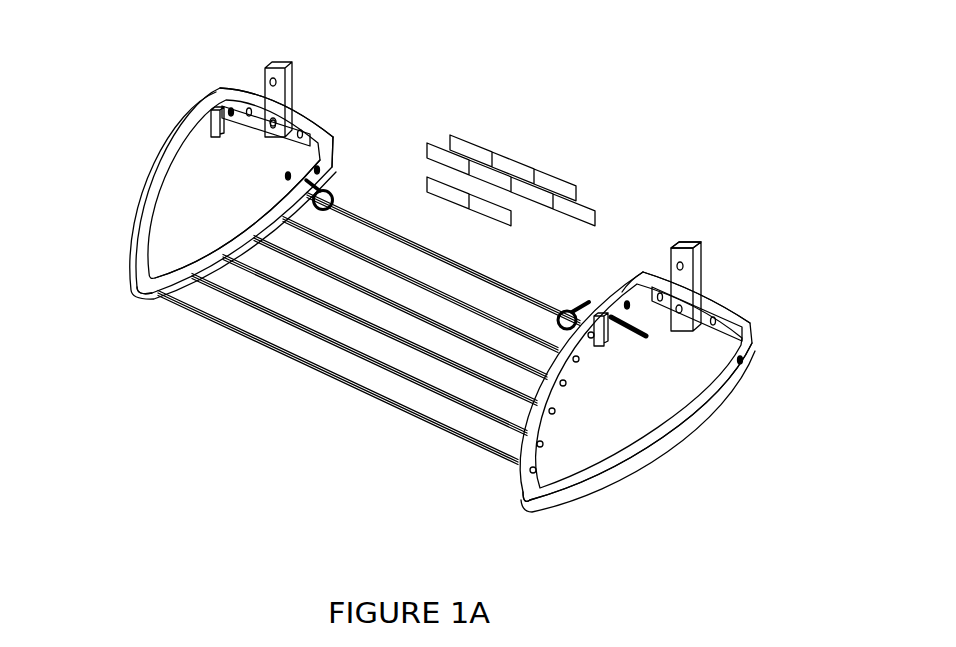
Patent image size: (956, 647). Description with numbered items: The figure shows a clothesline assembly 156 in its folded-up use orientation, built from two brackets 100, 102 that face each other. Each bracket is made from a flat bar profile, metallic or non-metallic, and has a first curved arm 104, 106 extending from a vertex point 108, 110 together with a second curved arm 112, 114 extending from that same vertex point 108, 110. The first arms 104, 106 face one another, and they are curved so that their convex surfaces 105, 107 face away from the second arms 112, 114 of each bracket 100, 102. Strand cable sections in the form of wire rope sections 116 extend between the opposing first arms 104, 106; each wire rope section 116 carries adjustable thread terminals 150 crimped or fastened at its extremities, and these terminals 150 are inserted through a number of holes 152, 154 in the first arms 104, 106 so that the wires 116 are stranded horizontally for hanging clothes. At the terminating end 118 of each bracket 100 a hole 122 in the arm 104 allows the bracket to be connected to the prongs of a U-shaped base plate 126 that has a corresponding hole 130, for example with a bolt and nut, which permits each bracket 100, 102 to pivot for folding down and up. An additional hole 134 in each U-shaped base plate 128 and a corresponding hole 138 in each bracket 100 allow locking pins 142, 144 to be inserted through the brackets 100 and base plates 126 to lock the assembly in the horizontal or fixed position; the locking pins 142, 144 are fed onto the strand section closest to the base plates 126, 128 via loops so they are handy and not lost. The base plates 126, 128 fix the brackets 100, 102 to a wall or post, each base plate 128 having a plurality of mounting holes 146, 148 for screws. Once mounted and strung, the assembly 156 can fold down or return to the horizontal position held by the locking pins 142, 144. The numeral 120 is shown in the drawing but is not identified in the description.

The bracket 100 is at (399, 286).
The bracket 102 is at (637, 333).
The first curved arm 104 is at (245, 171).
The convex surface 105 is at (273, 233).
The first curved arm 106 is at (555, 395).
The convex surface 107 is at (512, 417).
The vertex point 108 is at (138, 287).
The vertex point 110 is at (540, 503).
The second curved arm 112 is at (178, 137).
The second curved arm 114 is at (607, 468).
The wire rope section 116 is at (338, 214).
The terminating end 118 is at (338, 132).
The upper rail of second end frame 120 is at (637, 260).
The hole 122 is at (333, 166).
The U-shaped base plate 126 is at (301, 107).
The U-shaped base plate 128 is at (652, 290).
The hole 130 is at (256, 97).
The additional hole 134 is at (623, 287).
The corresponding hole 138 is at (576, 310).
The locking pin 142 is at (328, 190).
The locking pin 144 is at (563, 305).
The mounting hole 146 is at (717, 300).
The mounting hole 148 is at (681, 247).
The adjustable thread terminal 150 is at (250, 258).
The hole 152 is at (240, 228).
The hole 154 is at (563, 383).
The clothesline assembly 156 is at (514, 162).